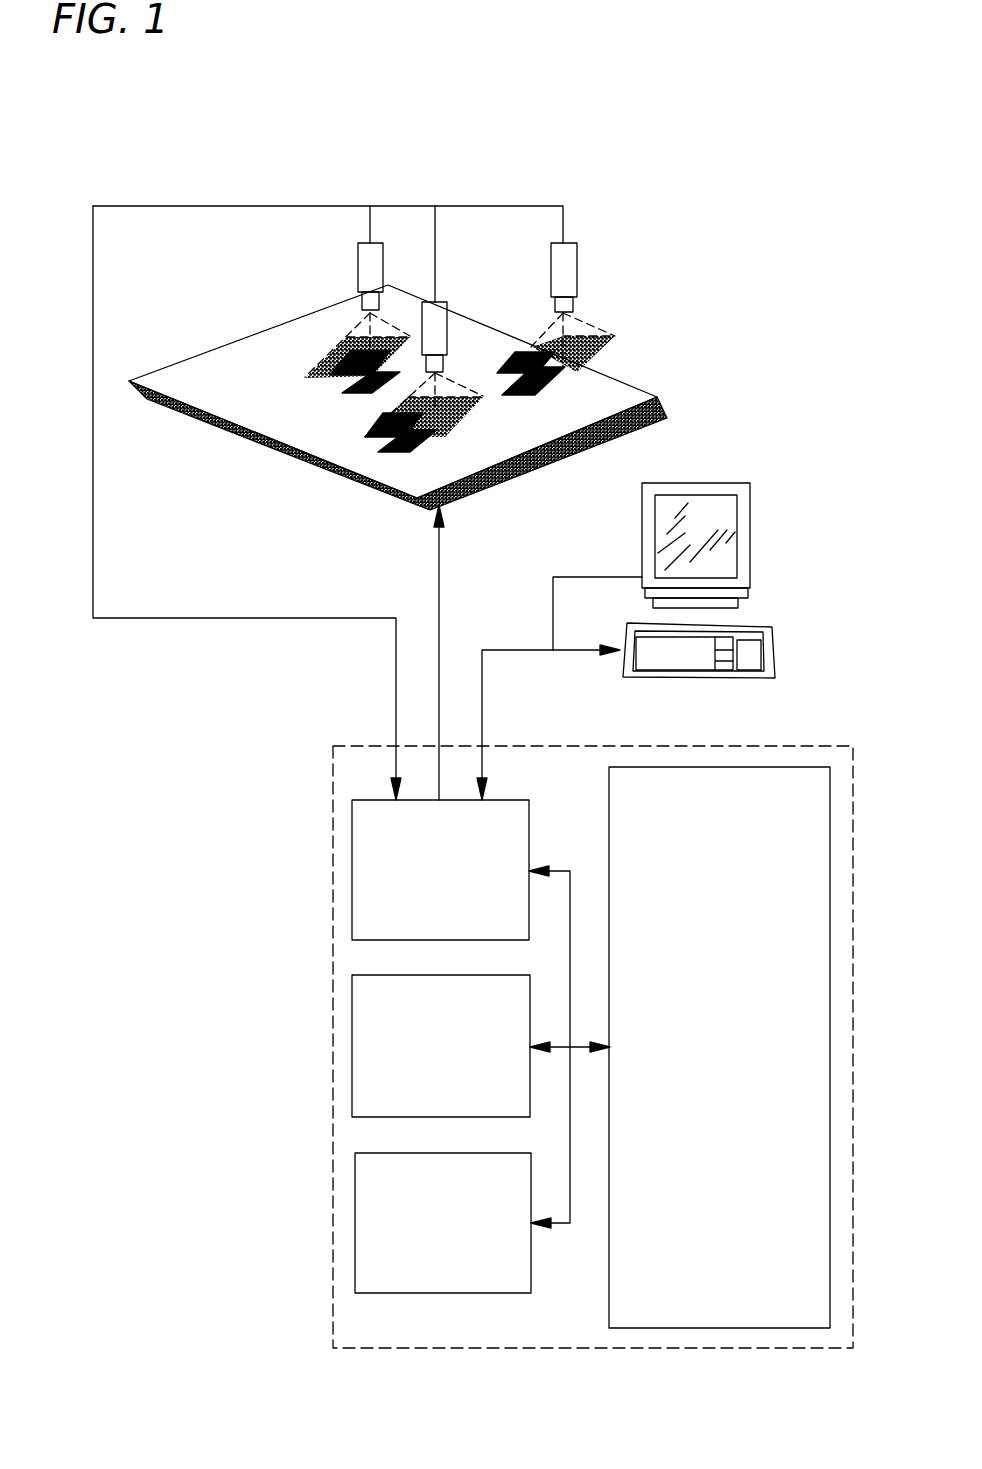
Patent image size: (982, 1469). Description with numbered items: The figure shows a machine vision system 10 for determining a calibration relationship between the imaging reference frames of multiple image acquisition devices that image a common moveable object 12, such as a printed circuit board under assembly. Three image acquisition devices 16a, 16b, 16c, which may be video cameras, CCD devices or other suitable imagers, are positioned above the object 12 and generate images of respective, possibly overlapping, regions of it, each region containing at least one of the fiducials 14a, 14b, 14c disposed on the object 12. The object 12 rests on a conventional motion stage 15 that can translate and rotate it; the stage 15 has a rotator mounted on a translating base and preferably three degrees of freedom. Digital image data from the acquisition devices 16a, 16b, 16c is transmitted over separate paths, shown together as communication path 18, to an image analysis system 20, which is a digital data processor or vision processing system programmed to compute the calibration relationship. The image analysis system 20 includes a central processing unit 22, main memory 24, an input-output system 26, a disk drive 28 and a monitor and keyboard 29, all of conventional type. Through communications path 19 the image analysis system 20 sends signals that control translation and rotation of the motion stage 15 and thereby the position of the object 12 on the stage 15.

The machine vision system 10 is at (724, 260).
The moveable object 12 is at (232, 362).
The fiducial 14a is at (405, 440).
The fiducial 14b is at (336, 381).
The fiducial 14c is at (505, 370).
The motion stage 15 is at (662, 407).
The image acquisition device 16a is at (566, 270).
The image acquisition device 16b is at (435, 323).
The image acquisition device 16c is at (366, 275).
The communication path 18 is at (235, 618).
The communications path 19 is at (440, 592).
The image analysis system 20 is at (333, 1327).
The central processing unit 22 is at (763, 767).
The main memory 24 is at (352, 1047).
The input-output system 26 is at (352, 867).
The disk drive 28 is at (355, 1223).
The monitor and keyboard 29 is at (766, 605).